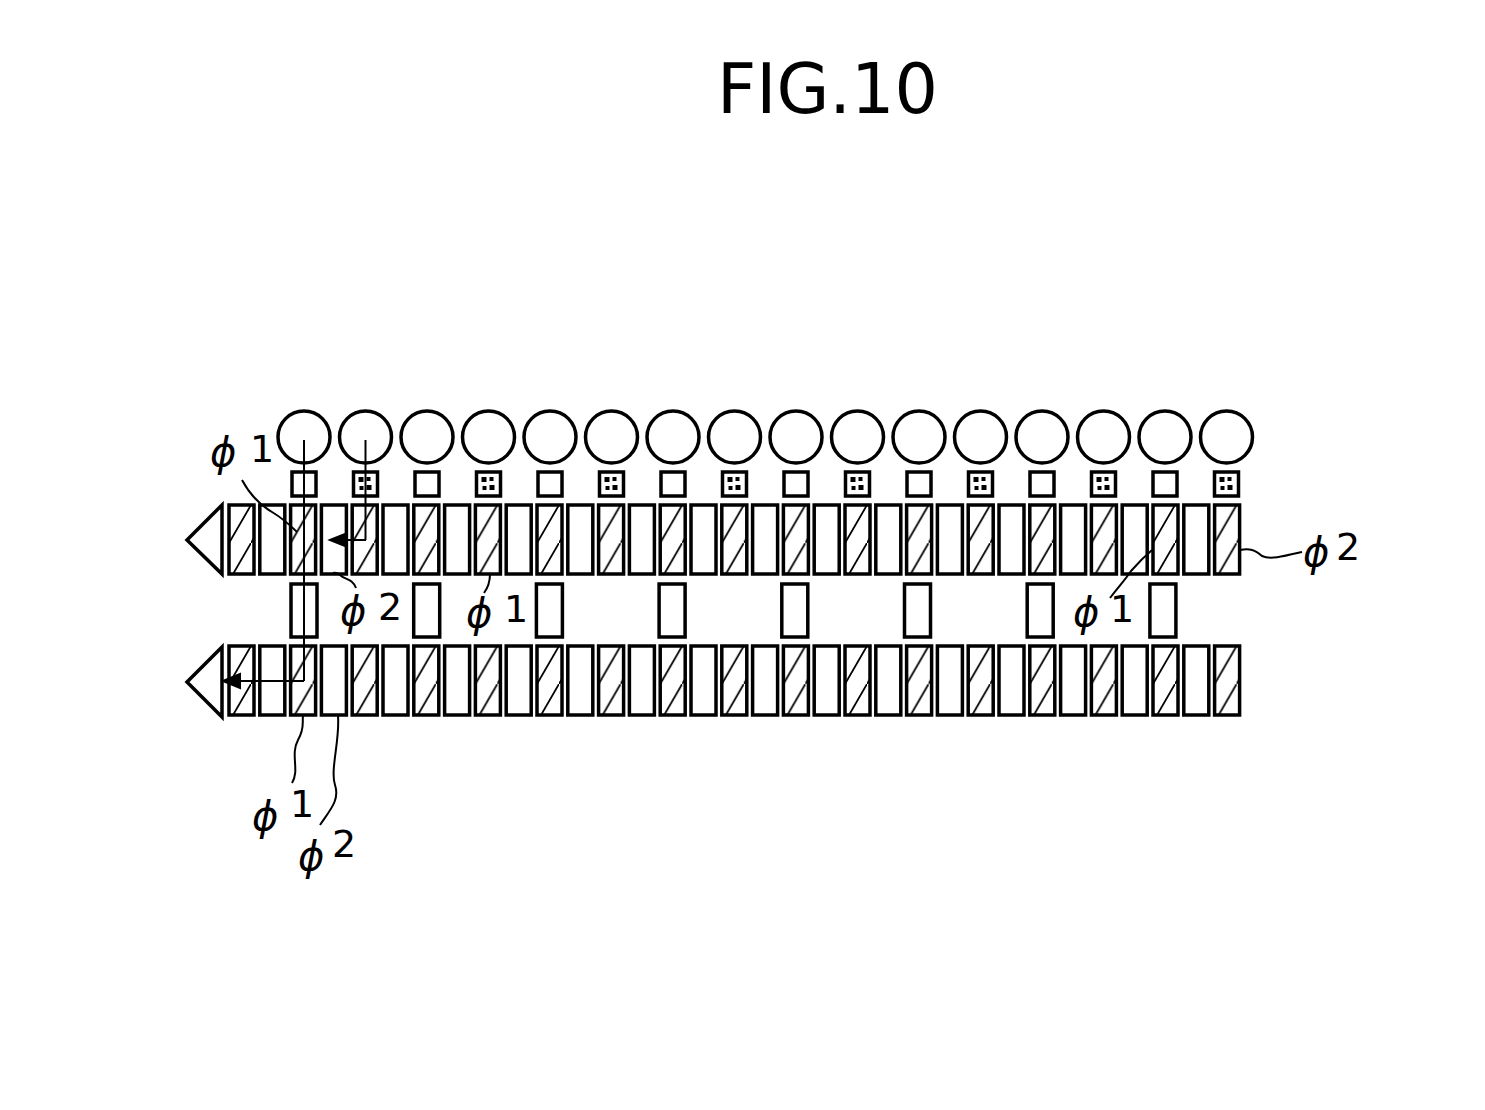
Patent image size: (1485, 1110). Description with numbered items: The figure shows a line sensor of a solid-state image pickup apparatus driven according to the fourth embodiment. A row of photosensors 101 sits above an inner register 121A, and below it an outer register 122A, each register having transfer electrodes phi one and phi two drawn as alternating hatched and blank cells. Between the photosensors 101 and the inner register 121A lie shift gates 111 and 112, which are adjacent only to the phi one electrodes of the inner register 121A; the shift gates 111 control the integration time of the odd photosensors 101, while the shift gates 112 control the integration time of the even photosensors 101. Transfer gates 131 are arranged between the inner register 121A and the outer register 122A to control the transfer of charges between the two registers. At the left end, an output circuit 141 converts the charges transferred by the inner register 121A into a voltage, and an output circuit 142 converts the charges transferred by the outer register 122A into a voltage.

The photosensor 101 is at (302, 411).
The shift gate 111 is at (685, 476).
The shift gate 112 is at (378, 482).
The inner register 121A is at (1290, 515).
The outer register 122A is at (1285, 689).
The transfer gate 131 is at (291, 602).
The output circuit 141 is at (195, 527).
The output circuit 142 is at (193, 706).